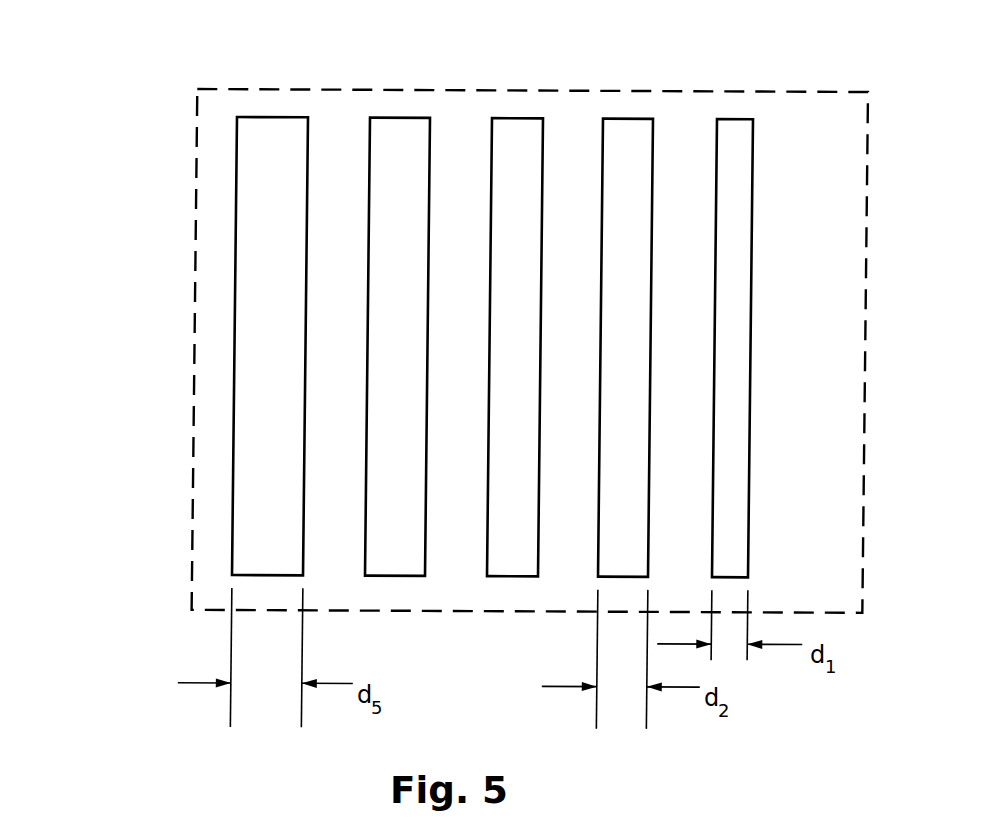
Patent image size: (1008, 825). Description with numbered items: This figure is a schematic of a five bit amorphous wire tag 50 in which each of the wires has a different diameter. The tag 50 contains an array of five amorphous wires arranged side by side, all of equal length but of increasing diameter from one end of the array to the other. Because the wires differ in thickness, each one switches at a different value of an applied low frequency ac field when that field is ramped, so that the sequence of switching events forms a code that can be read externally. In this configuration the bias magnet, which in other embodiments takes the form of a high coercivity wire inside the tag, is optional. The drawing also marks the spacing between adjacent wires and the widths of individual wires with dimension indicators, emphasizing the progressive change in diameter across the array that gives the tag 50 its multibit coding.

The semiconductor device / electrode structure 50 is at (157, 155).